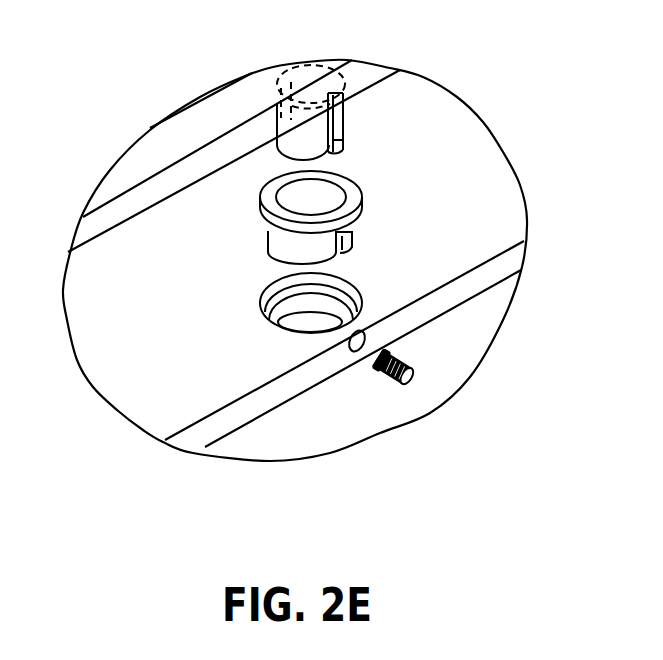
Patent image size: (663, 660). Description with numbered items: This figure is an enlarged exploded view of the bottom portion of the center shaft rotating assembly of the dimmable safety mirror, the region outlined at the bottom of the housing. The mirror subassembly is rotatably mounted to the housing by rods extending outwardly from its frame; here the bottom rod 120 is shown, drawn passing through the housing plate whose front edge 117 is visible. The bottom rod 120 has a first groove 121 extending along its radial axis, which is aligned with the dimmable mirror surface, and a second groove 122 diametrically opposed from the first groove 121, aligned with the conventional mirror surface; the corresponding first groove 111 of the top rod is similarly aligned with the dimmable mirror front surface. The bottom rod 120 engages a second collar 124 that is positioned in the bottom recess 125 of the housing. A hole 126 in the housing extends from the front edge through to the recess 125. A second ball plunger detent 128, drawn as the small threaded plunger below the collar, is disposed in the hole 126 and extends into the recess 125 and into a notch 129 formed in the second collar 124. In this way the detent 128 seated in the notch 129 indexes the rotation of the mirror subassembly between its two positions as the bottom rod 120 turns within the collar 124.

The first groove 111 is at (141, 216).
The front edge 117 is at (198, 435).
The bottom rod 120 is at (345, 120).
The first groove 121 is at (341, 147).
The second groove 122 is at (284, 78).
The second collar 124 is at (362, 196).
The bottom recess 125 is at (333, 305).
The hole 126 is at (348, 344).
The second ball plunger detent 128 is at (379, 369).
The notch 129 is at (346, 247).